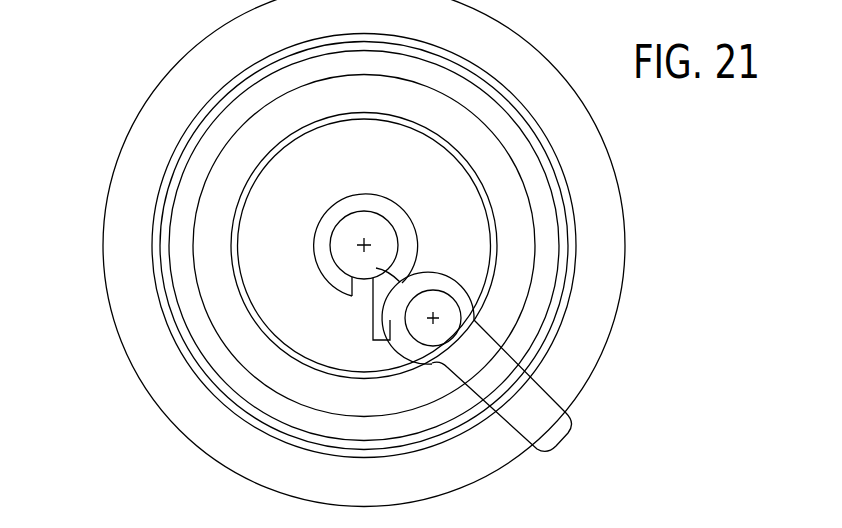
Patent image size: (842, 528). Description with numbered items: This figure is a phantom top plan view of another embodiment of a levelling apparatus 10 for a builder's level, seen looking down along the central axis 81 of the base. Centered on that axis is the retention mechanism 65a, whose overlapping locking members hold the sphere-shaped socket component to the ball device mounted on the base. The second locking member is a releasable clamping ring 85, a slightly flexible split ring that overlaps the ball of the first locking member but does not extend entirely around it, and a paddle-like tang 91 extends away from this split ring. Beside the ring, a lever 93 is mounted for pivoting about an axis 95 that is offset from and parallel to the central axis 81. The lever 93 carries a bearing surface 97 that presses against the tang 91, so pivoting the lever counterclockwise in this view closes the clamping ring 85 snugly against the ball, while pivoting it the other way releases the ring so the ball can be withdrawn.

The levelling apparatus 10 is at (108, 353).
The retention mechanism 65a is at (279, 302).
The clamping ring 85 is at (319, 192).
The central axis 81 is at (366, 243).
The tang 91 is at (372, 321).
The axis 95 is at (437, 320).
The bearing surface 97 is at (413, 298).
The lever 93 is at (572, 434).